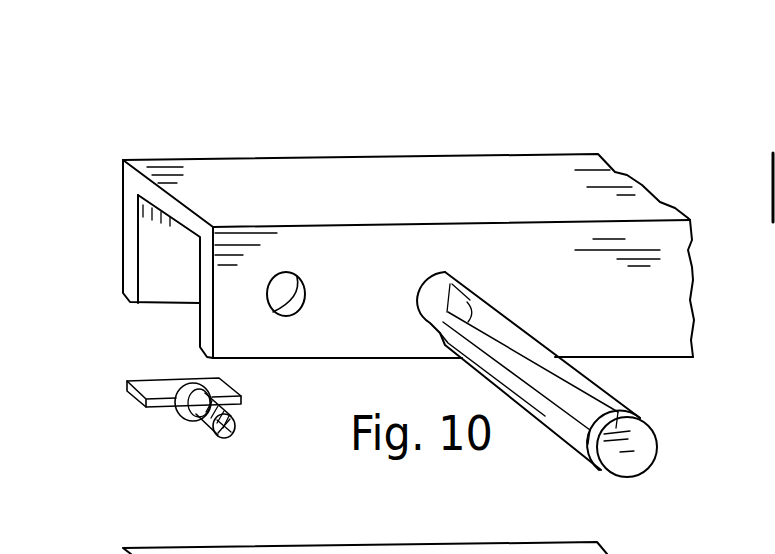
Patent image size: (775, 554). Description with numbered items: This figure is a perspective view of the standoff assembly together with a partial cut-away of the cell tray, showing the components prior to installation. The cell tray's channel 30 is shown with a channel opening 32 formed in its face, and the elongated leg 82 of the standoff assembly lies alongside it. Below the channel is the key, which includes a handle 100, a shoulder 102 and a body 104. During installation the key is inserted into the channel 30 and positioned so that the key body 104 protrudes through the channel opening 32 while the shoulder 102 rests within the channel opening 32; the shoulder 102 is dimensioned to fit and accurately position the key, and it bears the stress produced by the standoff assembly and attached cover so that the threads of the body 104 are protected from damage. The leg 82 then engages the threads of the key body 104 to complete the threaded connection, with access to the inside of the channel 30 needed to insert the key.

The channel 30 is at (507, 173).
The channel opening 32 is at (283, 288).
The leg 82 is at (613, 383).
The handle 100 is at (163, 380).
The shoulder 102 is at (199, 385).
The body 104 is at (233, 422).